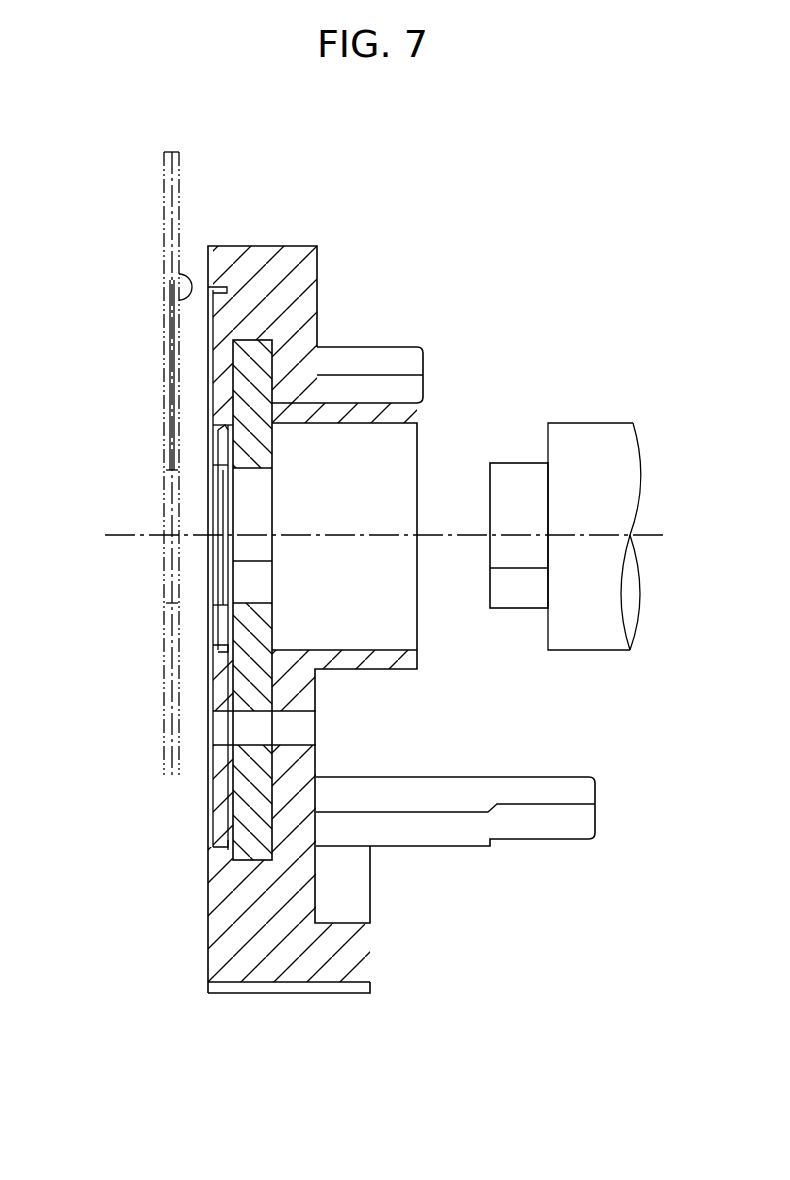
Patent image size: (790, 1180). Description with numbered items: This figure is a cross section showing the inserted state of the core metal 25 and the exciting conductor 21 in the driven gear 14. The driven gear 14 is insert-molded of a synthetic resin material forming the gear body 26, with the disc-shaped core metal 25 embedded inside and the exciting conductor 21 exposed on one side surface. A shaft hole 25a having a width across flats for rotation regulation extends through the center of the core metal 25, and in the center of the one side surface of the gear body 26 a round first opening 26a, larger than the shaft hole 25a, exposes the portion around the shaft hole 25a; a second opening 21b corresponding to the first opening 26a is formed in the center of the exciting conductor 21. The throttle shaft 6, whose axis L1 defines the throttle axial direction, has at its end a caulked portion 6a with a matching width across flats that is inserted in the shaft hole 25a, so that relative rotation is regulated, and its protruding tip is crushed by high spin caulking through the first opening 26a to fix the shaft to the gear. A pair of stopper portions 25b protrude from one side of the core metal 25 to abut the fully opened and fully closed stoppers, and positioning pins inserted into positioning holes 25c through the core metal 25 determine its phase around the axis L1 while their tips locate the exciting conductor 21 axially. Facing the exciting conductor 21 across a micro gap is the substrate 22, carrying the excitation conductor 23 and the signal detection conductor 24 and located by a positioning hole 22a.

The throttle shaft 6 is at (590, 448).
The caulked portion 6a is at (517, 483).
The driven gear 14 is at (231, 243).
The exciting conductor 21 is at (208, 373).
The second opening 21b is at (222, 433).
The substrate 22 is at (117, 463).
The positioning hole 22a is at (173, 602).
The excitation conductor 23 is at (117, 357).
The signal detection conductor 24 is at (176, 275).
The core metal 25 is at (265, 445).
The shaft hole 25a is at (250, 473).
The stopper portion 25b is at (385, 352).
The positioning hole 25c is at (253, 713).
The gear body 26 is at (278, 265).
The first opening 26a is at (240, 430).
The axis L1 is at (655, 535).